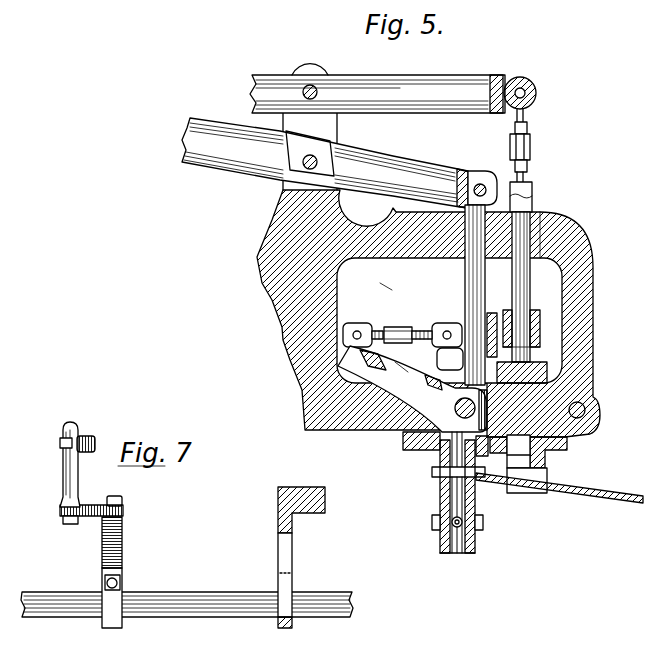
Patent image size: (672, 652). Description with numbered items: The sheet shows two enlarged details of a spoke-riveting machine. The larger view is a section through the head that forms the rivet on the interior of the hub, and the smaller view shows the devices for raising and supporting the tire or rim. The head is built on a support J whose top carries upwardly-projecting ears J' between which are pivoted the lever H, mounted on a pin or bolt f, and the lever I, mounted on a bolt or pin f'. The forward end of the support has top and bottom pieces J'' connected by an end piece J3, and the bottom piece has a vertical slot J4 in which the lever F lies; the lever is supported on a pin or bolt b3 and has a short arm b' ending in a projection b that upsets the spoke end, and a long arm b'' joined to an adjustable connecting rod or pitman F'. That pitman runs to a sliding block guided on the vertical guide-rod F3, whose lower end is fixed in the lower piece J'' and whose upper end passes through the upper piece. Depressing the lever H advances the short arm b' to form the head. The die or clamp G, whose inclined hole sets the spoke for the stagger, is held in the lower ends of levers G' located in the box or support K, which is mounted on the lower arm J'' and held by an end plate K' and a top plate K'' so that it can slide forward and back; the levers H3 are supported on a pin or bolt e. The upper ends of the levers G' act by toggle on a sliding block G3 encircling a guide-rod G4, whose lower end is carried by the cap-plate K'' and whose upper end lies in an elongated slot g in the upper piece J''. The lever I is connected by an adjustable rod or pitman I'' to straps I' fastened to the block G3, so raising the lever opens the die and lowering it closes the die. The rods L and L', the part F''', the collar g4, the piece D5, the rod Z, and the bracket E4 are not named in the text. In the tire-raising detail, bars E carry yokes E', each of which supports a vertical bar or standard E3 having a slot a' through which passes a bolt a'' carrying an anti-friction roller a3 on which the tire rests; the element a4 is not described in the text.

In FIG. 5, the lever I is at (393, 88).
In FIG. 5, the straps I' is at (528, 197).
In FIG. 5, the rod or pitman I'' is at (530, 145).
In FIG. 5, the pin or bolt f is at (304, 162).
In FIG. 5, the bolt or pin f' is at (318, 96).
In FIG. 5, the lever H is at (339, 163).
In FIG. 5, the support J is at (425, 313).
In FIG. 5, the ears J' is at (318, 151).
In FIG. 5, the top and bottom piece J'' is at (371, 360).
In FIG. 5, the end piece J3 is at (595, 338).
In FIG. 5, the vertical slot J4 is at (438, 368).
In FIG. 5, the slot g is at (548, 222).
In FIG. 5, the rod L is at (521, 287).
In FIG. 5, the rod L' is at (481, 295).
In FIG. 5, the guide-rod G4 is at (526, 311).
In FIG. 5, the sliding block or head G3 is at (530, 333).
In FIG. 5, the top plate K'' is at (528, 367).
In FIG. 7, the top plate K'' is at (91, 530).
In FIG. 5, the guide-rod F3 is at (394, 308).
In FIG. 5, the link end F''' is at (444, 322).
In FIG. 5, the end plate K' is at (471, 388).
In FIG. 5, the connecting rod or pitman F' is at (412, 389).
In FIG. 5, the long arm b'' is at (394, 374).
In FIG. 5, the pin or bolt b3 is at (457, 408).
In FIG. 5, the knurled collar g4 is at (489, 410).
In FIG. 5, the short arm b' is at (455, 449).
In FIG. 5, the bracket D5 is at (417, 451).
In FIG. 5, the projection b is at (464, 496).
In FIG. 5, the box or support K is at (490, 454).
In FIG. 5, the lever G' is at (518, 451).
In FIG. 5, the die or clamp G is at (527, 492).
In FIG. 5, the rod Z is at (559, 487).
In FIG. 5, the pin or bolt e is at (600, 410).
In FIG. 7, the bar E is at (120, 562).
In FIG. 7, the yoke E' is at (187, 618).
In FIG. 7, the vertical bar E3 is at (78, 478).
In FIG. 7, the bracket E4 is at (292, 560).
In FIG. 7, the slot a' is at (52, 463).
In FIG. 7, the bolt a'' is at (53, 445).
In FIG. 7, the anti-friction roller a3 is at (89, 434).
In FIG. 7, the pin a4 is at (274, 575).